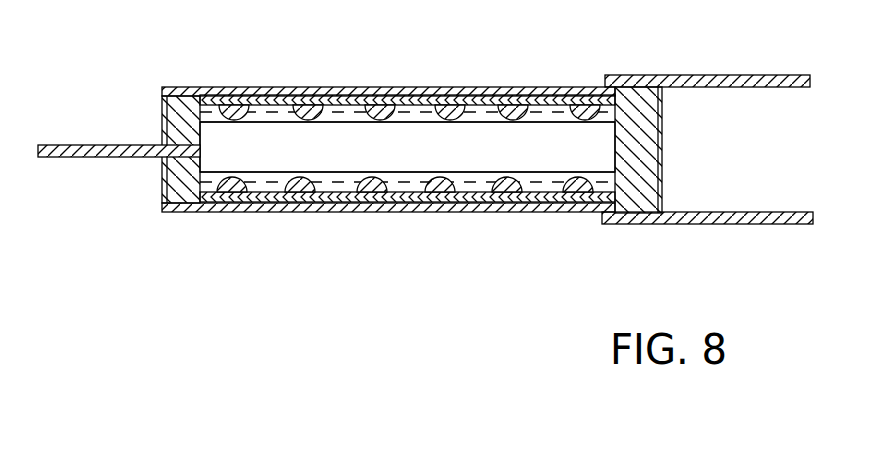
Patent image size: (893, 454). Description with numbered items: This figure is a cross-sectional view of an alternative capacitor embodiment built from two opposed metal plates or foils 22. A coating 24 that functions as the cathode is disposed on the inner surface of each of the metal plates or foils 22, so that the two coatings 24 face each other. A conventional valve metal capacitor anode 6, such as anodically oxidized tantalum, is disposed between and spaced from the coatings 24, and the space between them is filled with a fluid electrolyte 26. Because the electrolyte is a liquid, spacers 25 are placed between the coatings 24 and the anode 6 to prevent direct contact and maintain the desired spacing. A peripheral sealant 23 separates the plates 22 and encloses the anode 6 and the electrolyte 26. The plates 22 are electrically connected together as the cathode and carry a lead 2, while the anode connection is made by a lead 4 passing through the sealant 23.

The lead 2 is at (768, 75).
The second lead 4 is at (78, 160).
The valve metal capacitor anode 6 is at (265, 150).
The metal plates or foils 22 is at (508, 88).
The peripheral sealant 23 is at (645, 160).
The coating 24 is at (298, 100).
The spacers 25 is at (365, 186).
The fluid electrolyte 26 is at (413, 103).